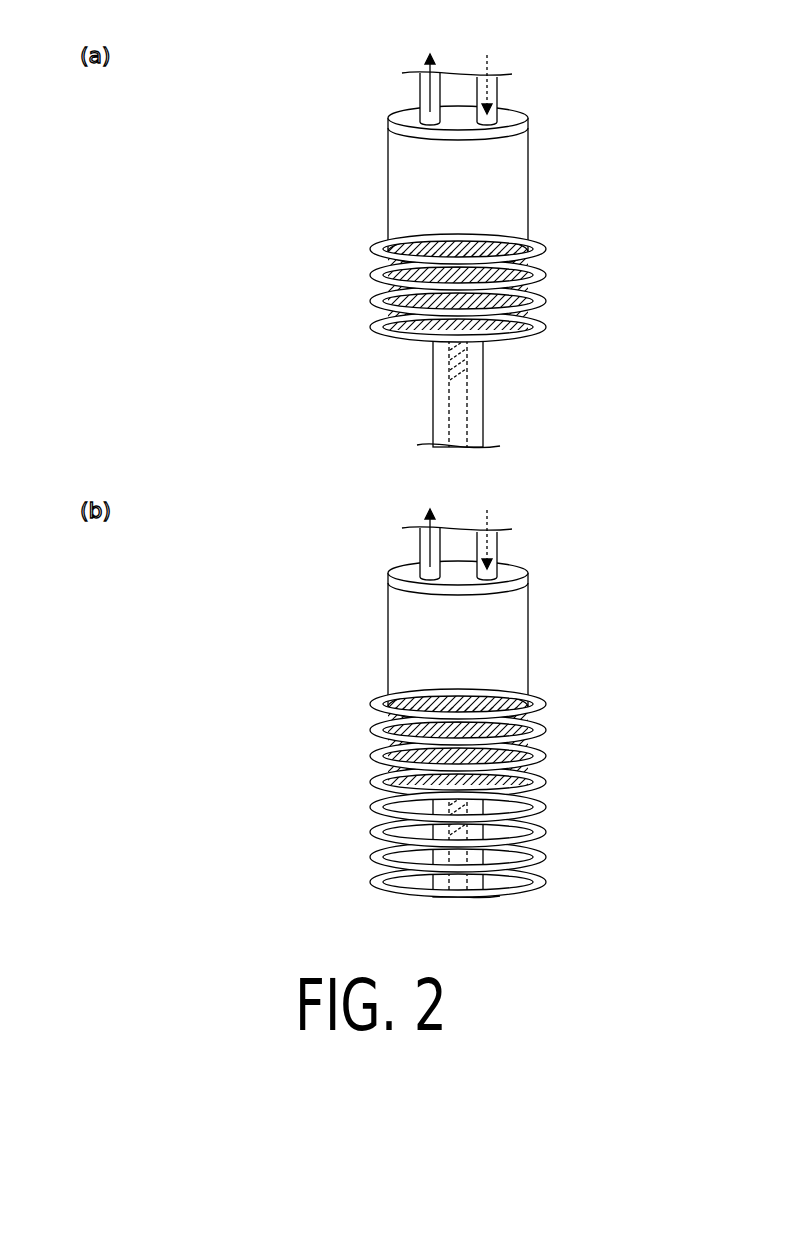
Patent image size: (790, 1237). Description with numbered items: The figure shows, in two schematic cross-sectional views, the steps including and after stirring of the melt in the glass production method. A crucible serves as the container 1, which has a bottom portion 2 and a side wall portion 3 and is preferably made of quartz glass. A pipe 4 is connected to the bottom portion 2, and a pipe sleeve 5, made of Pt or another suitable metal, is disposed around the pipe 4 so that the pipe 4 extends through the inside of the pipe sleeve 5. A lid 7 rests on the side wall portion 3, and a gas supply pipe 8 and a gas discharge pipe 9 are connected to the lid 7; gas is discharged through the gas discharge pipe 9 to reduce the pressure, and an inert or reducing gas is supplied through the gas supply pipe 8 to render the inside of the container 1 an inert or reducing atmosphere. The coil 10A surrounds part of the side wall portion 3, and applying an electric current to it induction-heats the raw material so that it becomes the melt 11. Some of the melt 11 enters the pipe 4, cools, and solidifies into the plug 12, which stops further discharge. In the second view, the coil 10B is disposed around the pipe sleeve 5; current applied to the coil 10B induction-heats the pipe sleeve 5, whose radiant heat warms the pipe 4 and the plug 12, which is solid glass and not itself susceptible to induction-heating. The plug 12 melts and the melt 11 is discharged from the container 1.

The container 1 is at (456, 476).
The bottom portion 2 is at (505, 334).
The side wall portion 3 is at (528, 198).
The pipe 4 is at (449, 383).
The pipe sleeve 5 is at (433, 349).
The lid 7 is at (398, 111).
The gas supply pipe 8 is at (497, 94).
The gas discharge pipe 9 is at (420, 91).
The coil 10A is at (547, 274).
The coil 10B is at (547, 824).
The melt 11 is at (400, 241).
The plug 12 is at (483, 365).